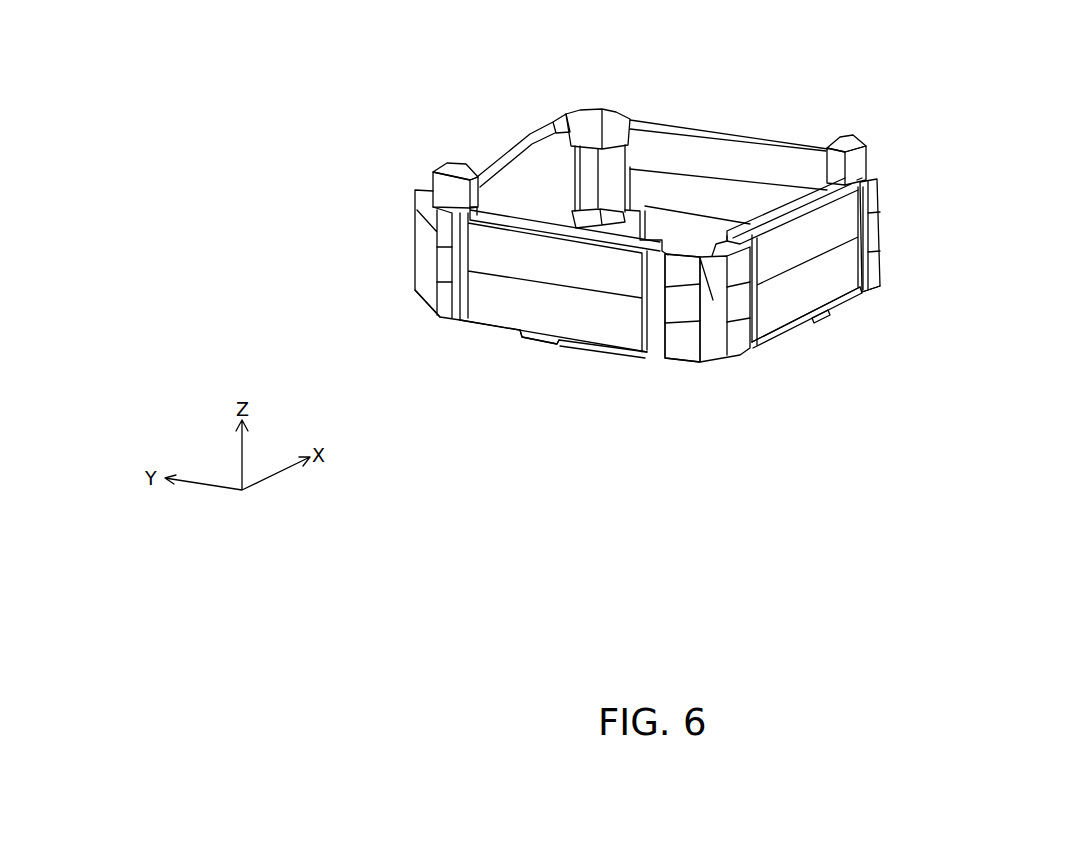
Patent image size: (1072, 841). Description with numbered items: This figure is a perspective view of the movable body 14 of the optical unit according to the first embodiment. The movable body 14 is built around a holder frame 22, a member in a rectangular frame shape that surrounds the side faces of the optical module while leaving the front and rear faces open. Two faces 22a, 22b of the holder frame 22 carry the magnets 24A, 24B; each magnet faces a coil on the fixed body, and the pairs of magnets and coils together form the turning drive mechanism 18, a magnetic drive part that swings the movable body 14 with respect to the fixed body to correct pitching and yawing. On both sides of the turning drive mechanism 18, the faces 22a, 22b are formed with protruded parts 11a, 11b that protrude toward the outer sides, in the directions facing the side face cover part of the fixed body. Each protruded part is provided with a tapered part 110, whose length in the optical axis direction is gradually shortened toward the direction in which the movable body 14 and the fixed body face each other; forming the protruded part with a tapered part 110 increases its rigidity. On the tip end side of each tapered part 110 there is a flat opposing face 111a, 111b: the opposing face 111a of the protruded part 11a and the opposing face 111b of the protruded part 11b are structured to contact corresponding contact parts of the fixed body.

The movable body 14 is at (934, 102).
The holder frame 22 is at (684, 124).
The face of the holder frame 22a is at (561, 334).
The face of the holder frame 22b is at (825, 316).
The magnet 24A is at (540, 297).
The magnet 24B is at (862, 300).
The tapered part 110 is at (445, 233).
The opposing face 111a is at (682, 308).
The opposing face 111b is at (440, 262).
The protruded part 11a is at (660, 273).
The protruded part 11b is at (441, 318).
The turning drive mechanism 18 is at (477, 364).